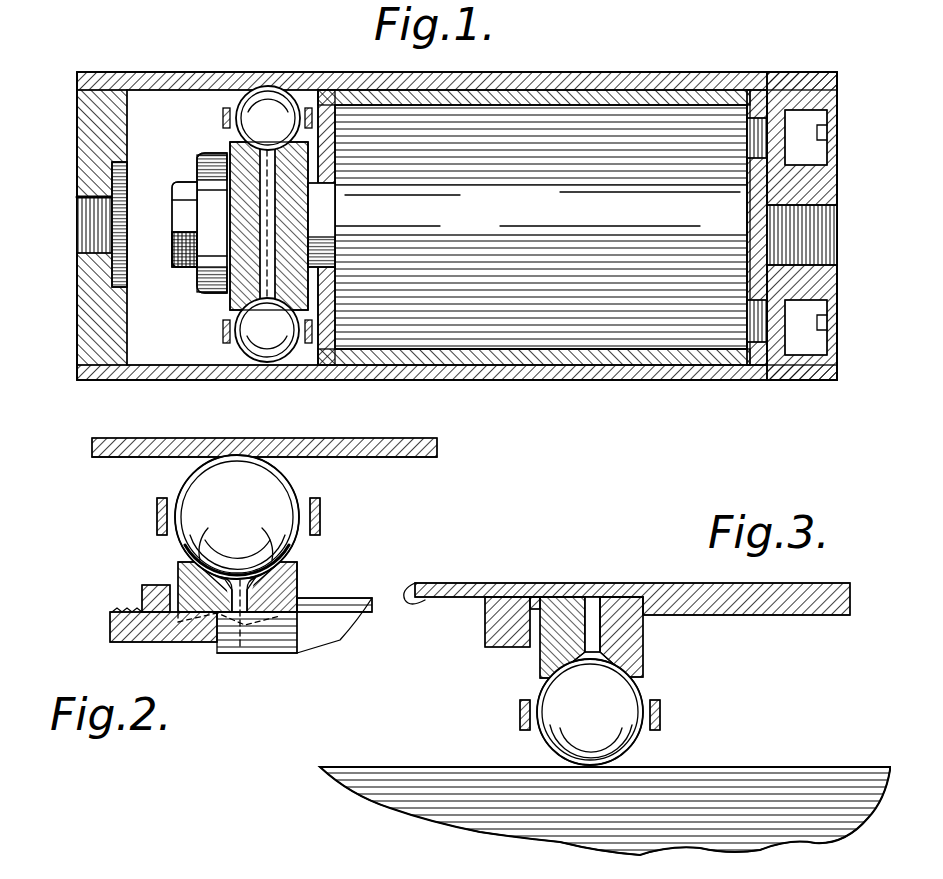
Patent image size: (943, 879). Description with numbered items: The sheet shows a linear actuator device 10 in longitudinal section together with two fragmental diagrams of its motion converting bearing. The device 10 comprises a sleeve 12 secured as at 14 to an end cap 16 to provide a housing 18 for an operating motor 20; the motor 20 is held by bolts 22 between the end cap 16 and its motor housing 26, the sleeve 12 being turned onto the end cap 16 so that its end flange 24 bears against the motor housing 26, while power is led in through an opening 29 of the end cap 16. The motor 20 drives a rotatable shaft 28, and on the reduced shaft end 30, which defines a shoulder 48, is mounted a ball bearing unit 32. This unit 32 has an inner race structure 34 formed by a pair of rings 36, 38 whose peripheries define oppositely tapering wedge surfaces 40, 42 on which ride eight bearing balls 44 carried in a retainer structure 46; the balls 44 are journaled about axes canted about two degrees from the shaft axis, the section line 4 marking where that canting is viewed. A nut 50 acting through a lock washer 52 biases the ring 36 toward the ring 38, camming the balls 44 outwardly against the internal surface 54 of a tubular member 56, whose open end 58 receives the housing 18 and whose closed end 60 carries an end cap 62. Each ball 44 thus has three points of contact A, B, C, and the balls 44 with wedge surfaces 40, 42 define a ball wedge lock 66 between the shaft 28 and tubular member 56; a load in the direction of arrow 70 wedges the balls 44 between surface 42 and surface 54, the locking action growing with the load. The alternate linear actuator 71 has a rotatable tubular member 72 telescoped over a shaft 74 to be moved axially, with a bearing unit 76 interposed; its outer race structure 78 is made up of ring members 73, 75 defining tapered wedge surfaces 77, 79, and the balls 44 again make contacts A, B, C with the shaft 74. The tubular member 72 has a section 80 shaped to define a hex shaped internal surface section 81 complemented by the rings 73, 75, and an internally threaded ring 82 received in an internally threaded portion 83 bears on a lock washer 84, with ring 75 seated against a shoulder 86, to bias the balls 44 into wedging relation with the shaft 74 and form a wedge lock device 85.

In FIG. 1, the linear actuator device 10 is at (663, 70).
In FIG. 1, the sleeve 12 is at (562, 98).
In FIG. 1, the securing connection 14 is at (745, 118).
In FIG. 1, the end cap 16 is at (818, 72).
In FIG. 1, the housing 18 is at (628, 392).
In FIG. 1, the operating motor 20 is at (553, 312).
In FIG. 1, the bolts 22 is at (810, 150).
In FIG. 1, the end flange 24 is at (350, 364).
In FIG. 1, the motor housing 26 is at (323, 88).
In FIG. 1, the rotatable shaft 28 is at (300, 225).
In FIG. 2, the rotatable shaft 28 is at (345, 625).
In FIG. 1, the opening 29 is at (818, 258).
In FIG. 1, the shaft end 30 is at (188, 268).
In FIG. 2, the shaft end 30 is at (112, 620).
In FIG. 1, the ball bearing unit 32 is at (218, 333).
In FIG. 1, the inner race structure 34 is at (269, 226).
In FIG. 2, the inner race structure 34 is at (168, 575).
In FIG. 1, the inner race ring 36 is at (265, 220).
In FIG. 2, the inner race ring 36 is at (192, 655).
In FIG. 1, the inner race ring 38 is at (330, 245).
In FIG. 2, the inner race ring 38 is at (300, 640).
In FIG. 2, the tapering wedge surface 40 is at (212, 530).
In FIG. 2, the tapering wedge surface 42 is at (261, 530).
In FIG. 1, the bearing balls 44 is at (272, 115).
In FIG. 2, the bearing balls 44 is at (272, 440).
In FIG. 3, the bearing balls 44 is at (640, 750).
In FIG. 2, the retainer structure 46 is at (335, 515).
In FIG. 2, the shoulder 48 is at (295, 595).
In FIG. 1, the nut 50 is at (202, 157).
In FIG. 2, the nut 50 is at (142, 590).
In FIG. 1, the lock washer 52 is at (190, 211).
In FIG. 1, the internal surface 54 is at (170, 90).
In FIG. 2, the internal surface 54 is at (200, 438).
In FIG. 1, the tubular member 56 is at (240, 90).
In FIG. 2, the tubular member 56 is at (318, 438).
In FIG. 1, the open end 58 is at (742, 80).
In FIG. 1, the closed end 60 is at (115, 72).
In FIG. 1, the end cap 62 is at (75, 152).
In FIG. 2, the ball wedge lock 66 is at (130, 503).
In FIG. 2, the arrow 70 is at (377, 433).
In FIG. 3, the linear actuator 71 is at (635, 580).
In FIG. 3, the tubular member 72 is at (815, 590).
In FIG. 3, the ring member 73 is at (565, 597).
In FIG. 3, the shaft 74 is at (770, 785).
In FIG. 3, the ring member 75 is at (630, 583).
In FIG. 3, the bearing unit 76 is at (685, 652).
In FIG. 3, the tapered wedge surface 77 is at (552, 678).
In FIG. 3, the outer race structure 78 is at (520, 665).
In FIG. 3, the tapered wedge surface 79 is at (645, 690).
In FIG. 3, the section 80 is at (605, 583).
In FIG. 3, the hex shaped internal surface section 81 is at (668, 712).
In FIG. 3, the internally threaded ring 82 is at (485, 622).
In FIG. 3, the internally threaded portion 83 is at (412, 590).
In FIG. 3, the lock washer 84 is at (535, 597).
In FIG. 3, the wedge lock device 85 is at (488, 728).
In FIG. 3, the shoulder 86 is at (645, 628).
In FIG. 2, the section line 4 is at (145, 425).
In FIG. 2, the point of contact A is at (237, 456).
In FIG. 3, the point of contact A is at (590, 765).
In FIG. 2, the point of contact B is at (168, 572).
In FIG. 3, the point of contact B is at (568, 665).
In FIG. 2, the point of contact C is at (298, 578).
In FIG. 3, the point of contact C is at (612, 665).